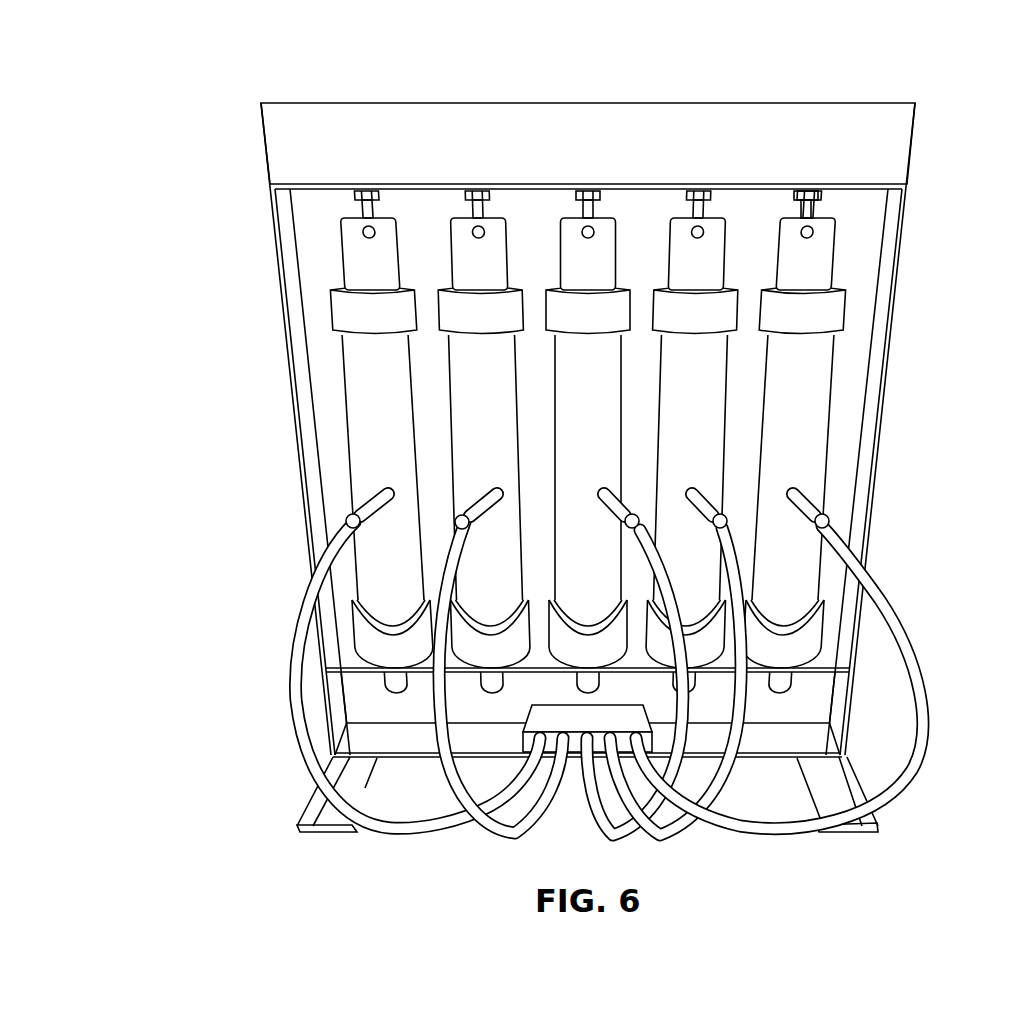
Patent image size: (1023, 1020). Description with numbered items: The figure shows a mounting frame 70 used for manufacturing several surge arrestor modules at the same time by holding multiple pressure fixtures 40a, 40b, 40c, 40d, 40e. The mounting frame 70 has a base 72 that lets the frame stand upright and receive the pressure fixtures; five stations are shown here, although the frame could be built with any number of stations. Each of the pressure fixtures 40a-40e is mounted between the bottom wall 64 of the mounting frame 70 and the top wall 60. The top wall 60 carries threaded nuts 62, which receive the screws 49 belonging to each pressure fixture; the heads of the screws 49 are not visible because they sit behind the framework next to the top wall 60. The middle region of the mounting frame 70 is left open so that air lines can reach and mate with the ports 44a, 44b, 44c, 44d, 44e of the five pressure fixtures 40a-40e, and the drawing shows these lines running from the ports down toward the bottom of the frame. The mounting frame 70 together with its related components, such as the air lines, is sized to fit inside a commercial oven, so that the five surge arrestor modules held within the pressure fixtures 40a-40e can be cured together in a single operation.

The mounting frame 70 is at (141, 77).
The pressure fixture 40a is at (362, 365).
The pressure fixture 40b is at (468, 364).
The pressure fixture 40c is at (575, 364).
The pressure fixture 40d is at (680, 364).
The pressure fixture 40e is at (780, 364).
The port 44a is at (368, 500).
The port 44b is at (478, 500).
The port 44c is at (600, 488).
The port 44d is at (705, 490).
The port 44e is at (815, 498).
The screw 49 is at (810, 211).
The top wall 60 is at (313, 191).
The threaded nut 62 is at (818, 196).
The bottom wall 64 is at (343, 650).
The base 72 is at (320, 811).